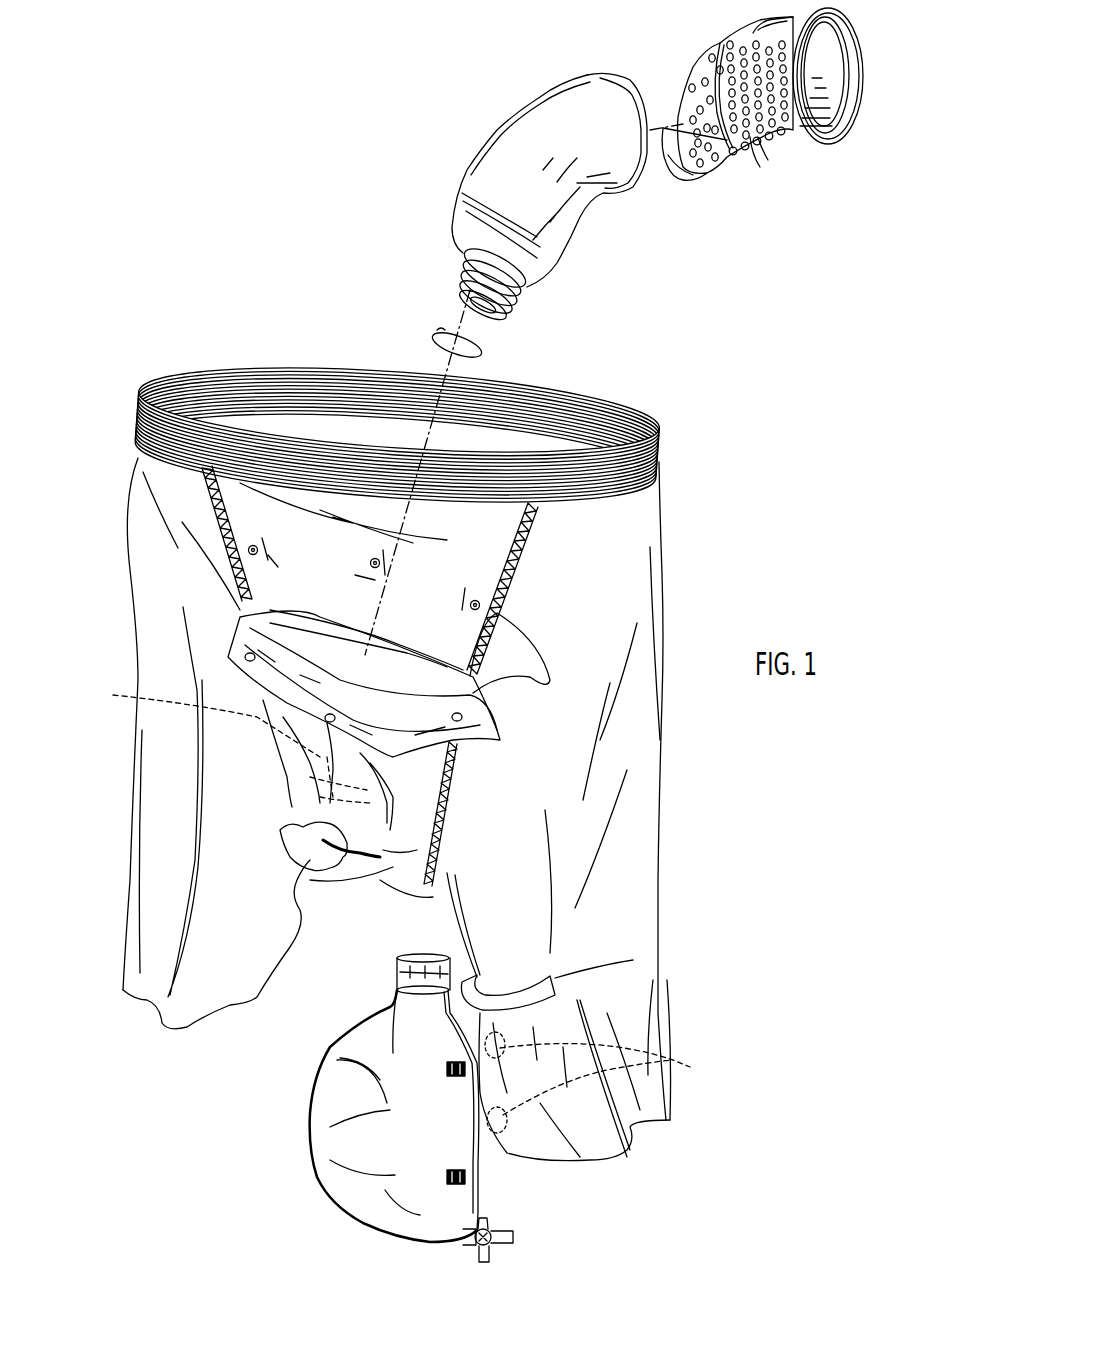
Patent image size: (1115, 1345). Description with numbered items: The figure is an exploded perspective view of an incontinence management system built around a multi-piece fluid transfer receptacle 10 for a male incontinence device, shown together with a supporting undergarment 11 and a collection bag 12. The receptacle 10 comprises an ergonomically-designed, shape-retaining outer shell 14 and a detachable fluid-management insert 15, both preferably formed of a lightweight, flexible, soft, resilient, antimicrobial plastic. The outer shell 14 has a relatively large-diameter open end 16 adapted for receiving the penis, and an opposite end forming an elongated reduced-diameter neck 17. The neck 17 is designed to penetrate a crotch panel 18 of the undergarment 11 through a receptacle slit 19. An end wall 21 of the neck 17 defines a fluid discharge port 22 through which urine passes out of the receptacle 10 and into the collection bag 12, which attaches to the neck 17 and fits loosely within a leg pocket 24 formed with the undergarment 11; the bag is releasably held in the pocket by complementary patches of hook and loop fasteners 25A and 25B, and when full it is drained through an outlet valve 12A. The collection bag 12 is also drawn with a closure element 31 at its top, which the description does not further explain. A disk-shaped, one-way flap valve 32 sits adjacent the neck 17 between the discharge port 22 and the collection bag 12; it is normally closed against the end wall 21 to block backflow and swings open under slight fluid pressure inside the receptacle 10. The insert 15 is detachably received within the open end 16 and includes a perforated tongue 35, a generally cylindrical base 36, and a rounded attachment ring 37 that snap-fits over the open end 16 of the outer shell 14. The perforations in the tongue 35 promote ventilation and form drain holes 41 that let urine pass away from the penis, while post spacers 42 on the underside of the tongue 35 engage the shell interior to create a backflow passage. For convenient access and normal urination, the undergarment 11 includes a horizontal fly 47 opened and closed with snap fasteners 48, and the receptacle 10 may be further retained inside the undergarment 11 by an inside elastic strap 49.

The multi-piece fluid transfer receptacle 10 is at (412, 108).
The supporting undergarment 11 is at (133, 487).
The collection bag 12 is at (317, 1107).
The outlet valve 12A is at (500, 1240).
The outer shell 14 is at (545, 230).
The fluid-management insert 15 is at (785, 152).
The open end 16 is at (617, 78).
The neck 17 is at (462, 262).
The crotch panel 18 is at (313, 807).
The receptacle slit 19 is at (283, 823).
The end wall 21 is at (500, 320).
The fluid discharge port 22 is at (462, 307).
The leg pocket 24 is at (633, 960).
The hook and loop fastener patch 25A is at (447, 1176).
The hook and loop fastener patch 25B is at (606, 1082).
The reservoir cap 31 is at (418, 957).
The one-way flap valve 32 is at (432, 351).
The perforated tongue 35 is at (687, 68).
The cylindrical base 36 is at (790, 17).
The attachment ring 37 is at (857, 55).
The drain holes 41 is at (688, 165).
The post spacers 42 is at (760, 167).
The horizontal fly 47 is at (247, 600).
The snap fasteners 48 is at (516, 665).
The inside elastic strap 49 is at (230, 739).